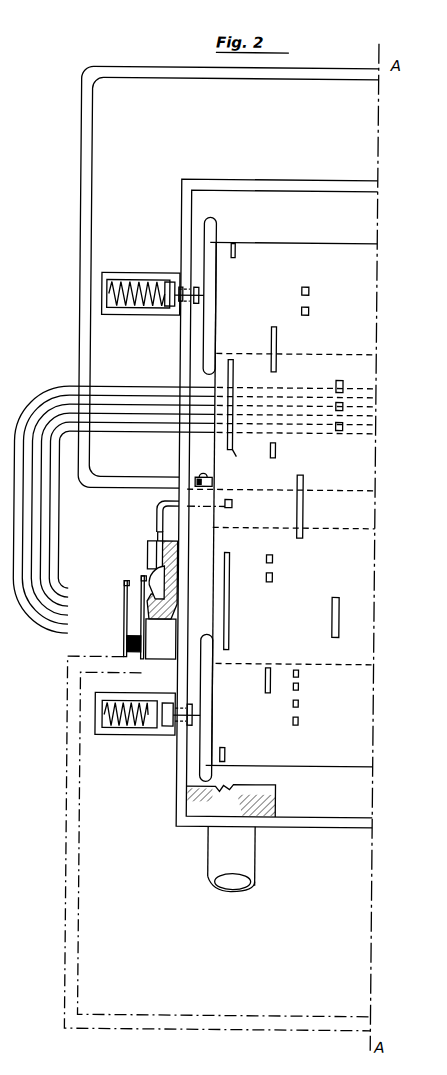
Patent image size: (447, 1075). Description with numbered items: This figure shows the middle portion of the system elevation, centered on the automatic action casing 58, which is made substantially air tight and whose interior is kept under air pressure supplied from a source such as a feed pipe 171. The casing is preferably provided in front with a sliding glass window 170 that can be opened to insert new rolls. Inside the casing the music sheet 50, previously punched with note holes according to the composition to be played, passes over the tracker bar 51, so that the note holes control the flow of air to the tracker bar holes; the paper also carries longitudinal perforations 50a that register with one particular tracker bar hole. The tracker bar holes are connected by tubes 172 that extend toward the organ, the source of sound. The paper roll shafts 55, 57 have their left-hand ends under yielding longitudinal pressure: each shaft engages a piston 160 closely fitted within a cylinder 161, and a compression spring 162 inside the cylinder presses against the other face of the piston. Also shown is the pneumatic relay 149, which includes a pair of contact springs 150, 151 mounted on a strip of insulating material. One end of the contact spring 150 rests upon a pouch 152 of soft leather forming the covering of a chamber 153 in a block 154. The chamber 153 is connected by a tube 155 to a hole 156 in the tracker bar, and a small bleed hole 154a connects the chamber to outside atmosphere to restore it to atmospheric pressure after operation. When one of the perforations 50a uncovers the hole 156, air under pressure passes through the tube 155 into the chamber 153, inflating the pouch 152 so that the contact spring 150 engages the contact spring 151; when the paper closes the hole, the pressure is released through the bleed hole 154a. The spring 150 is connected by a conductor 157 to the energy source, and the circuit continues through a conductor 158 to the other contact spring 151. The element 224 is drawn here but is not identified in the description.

The tube 224 is at (351, 80).
The automatic action casing 58 is at (300, 187).
The music sheet 50 is at (190, 457).
The longitudinal perforations 50a is at (235, 255).
The cylinder 161 is at (127, 282).
The compression spring 162 is at (133, 304).
The piston 160 is at (165, 308).
The paper roll shaft 55 is at (174, 283).
The paper roll shaft 57 is at (167, 725).
The tubes 172 is at (168, 419).
The hole in the tracker bar 156 is at (233, 505).
The tube 155 is at (157, 514).
The bleed hole 154a is at (148, 552).
The pouch 152 is at (178, 577).
The chamber 153 is at (160, 604).
The pneumatic relay 149 is at (121, 582).
The contact spring 150 is at (141, 598).
The contact spring 151 is at (125, 625).
The block 154 is at (163, 655).
The tracker bar 51 is at (343, 517).
The sliding glass window 170 is at (280, 797).
The feed pipe 171 is at (252, 860).
The conductor 157 is at (80, 880).
The conductor 158 is at (69, 931).